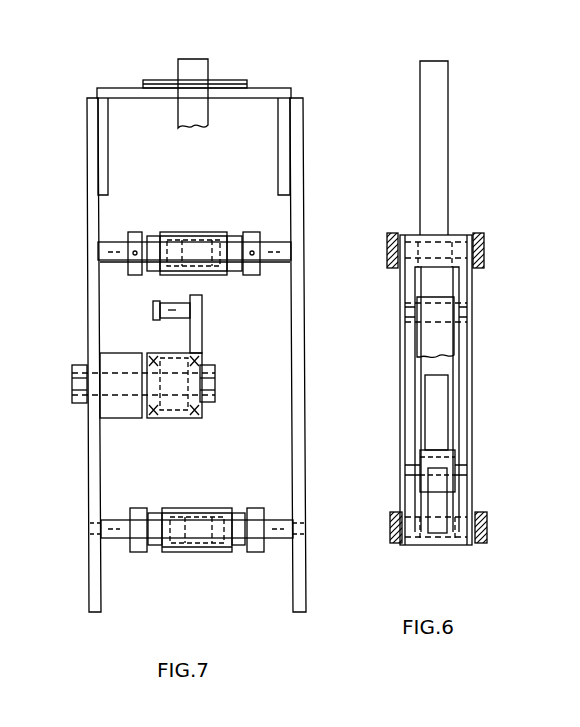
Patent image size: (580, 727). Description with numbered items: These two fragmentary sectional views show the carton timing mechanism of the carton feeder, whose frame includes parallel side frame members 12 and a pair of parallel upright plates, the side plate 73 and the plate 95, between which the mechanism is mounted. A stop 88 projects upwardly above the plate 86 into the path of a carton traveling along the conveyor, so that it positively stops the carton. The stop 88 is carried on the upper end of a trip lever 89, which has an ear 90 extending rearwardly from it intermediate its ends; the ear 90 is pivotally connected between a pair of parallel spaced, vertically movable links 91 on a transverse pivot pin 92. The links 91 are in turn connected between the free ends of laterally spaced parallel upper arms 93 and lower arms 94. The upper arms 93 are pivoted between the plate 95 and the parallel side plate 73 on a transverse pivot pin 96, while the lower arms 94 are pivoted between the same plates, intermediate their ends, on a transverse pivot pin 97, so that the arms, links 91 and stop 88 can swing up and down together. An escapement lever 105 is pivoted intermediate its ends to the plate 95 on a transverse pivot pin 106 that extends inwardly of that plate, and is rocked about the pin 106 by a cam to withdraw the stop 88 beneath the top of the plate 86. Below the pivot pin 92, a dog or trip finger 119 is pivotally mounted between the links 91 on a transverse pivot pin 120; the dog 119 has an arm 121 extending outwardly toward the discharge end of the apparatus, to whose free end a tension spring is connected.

In FIG. 7, the side frame member 12 is at (203, 333).
In FIG. 7, the side plate 73 is at (303, 232).
In FIG. 7, the plate 86 is at (265, 87).
In FIG. 7, the stop 88 is at (204, 60).
In FIG. 6, the stop 88 is at (445, 60).
In FIG. 7, the trip lever 89 is at (213, 117).
In FIG. 6, the trip lever 89 is at (448, 175).
In FIG. 6, the ear 90 is at (437, 297).
In FIG. 6, the link 91 is at (470, 365).
In FIG. 6, the transverse pivot pin 92 is at (470, 305).
In FIG. 7, the upper arm 93 is at (133, 275).
In FIG. 6, the upper arm 93 is at (387, 240).
In FIG. 7, the lower arm 94 is at (137, 552).
In FIG. 6, the lower arm 94 is at (392, 542).
In FIG. 7, the plate 95 is at (87, 213).
In FIG. 7, the transverse pivot pin 96 is at (113, 243).
In FIG. 7, the transverse pivot pin 97 is at (115, 520).
In FIG. 7, the escapement lever 105 is at (193, 418).
In FIG. 7, the transverse pivot pin 106 is at (118, 398).
In FIG. 6, the dog 119 is at (440, 415).
In FIG. 6, the transverse pivot pin 120 is at (462, 460).
In FIG. 6, the arm 121 is at (440, 502).